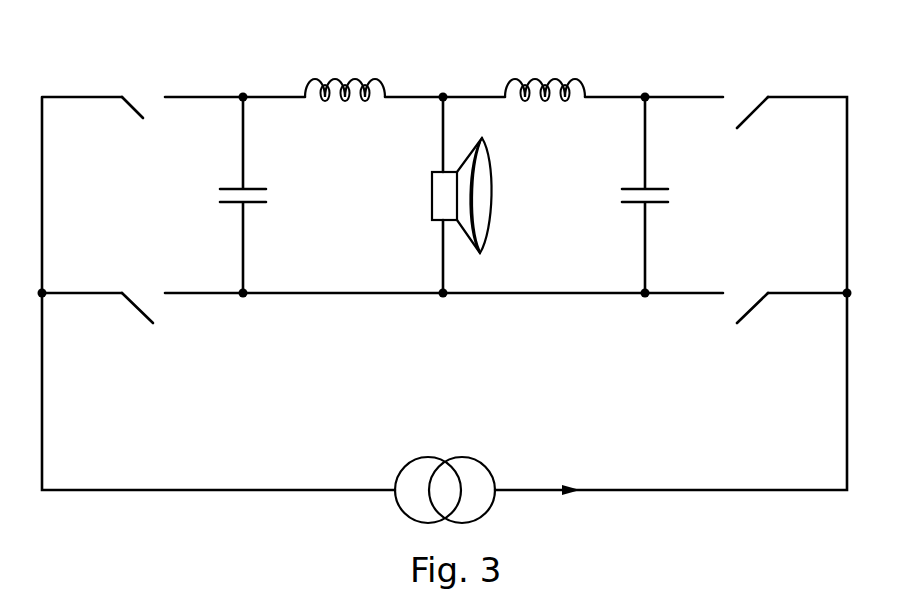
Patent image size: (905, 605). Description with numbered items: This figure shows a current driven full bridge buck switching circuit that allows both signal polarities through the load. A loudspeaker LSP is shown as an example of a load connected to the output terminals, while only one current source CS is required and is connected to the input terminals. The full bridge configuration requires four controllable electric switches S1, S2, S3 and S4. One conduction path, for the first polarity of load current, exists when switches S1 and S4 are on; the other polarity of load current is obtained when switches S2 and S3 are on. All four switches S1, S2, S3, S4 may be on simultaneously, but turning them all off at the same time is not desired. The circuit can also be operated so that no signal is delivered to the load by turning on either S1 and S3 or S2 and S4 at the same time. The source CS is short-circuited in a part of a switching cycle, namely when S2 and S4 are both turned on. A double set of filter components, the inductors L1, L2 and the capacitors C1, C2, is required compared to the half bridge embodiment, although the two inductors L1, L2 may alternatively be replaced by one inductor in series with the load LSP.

The first controllable electric switch S1 is at (149, 129).
The second controllable electric switch S2 is at (149, 328).
The third controllable electric switch S3 is at (746, 134).
The fourth controllable electric switch S4 is at (745, 328).
The first inductor L1 is at (345, 68).
The second inductor L2 is at (545, 68).
The first capacitor C1 is at (268, 195).
The second capacitor C2 is at (672, 195).
The loudspeaker LSP is at (472, 190).
The current source CS is at (470, 477).